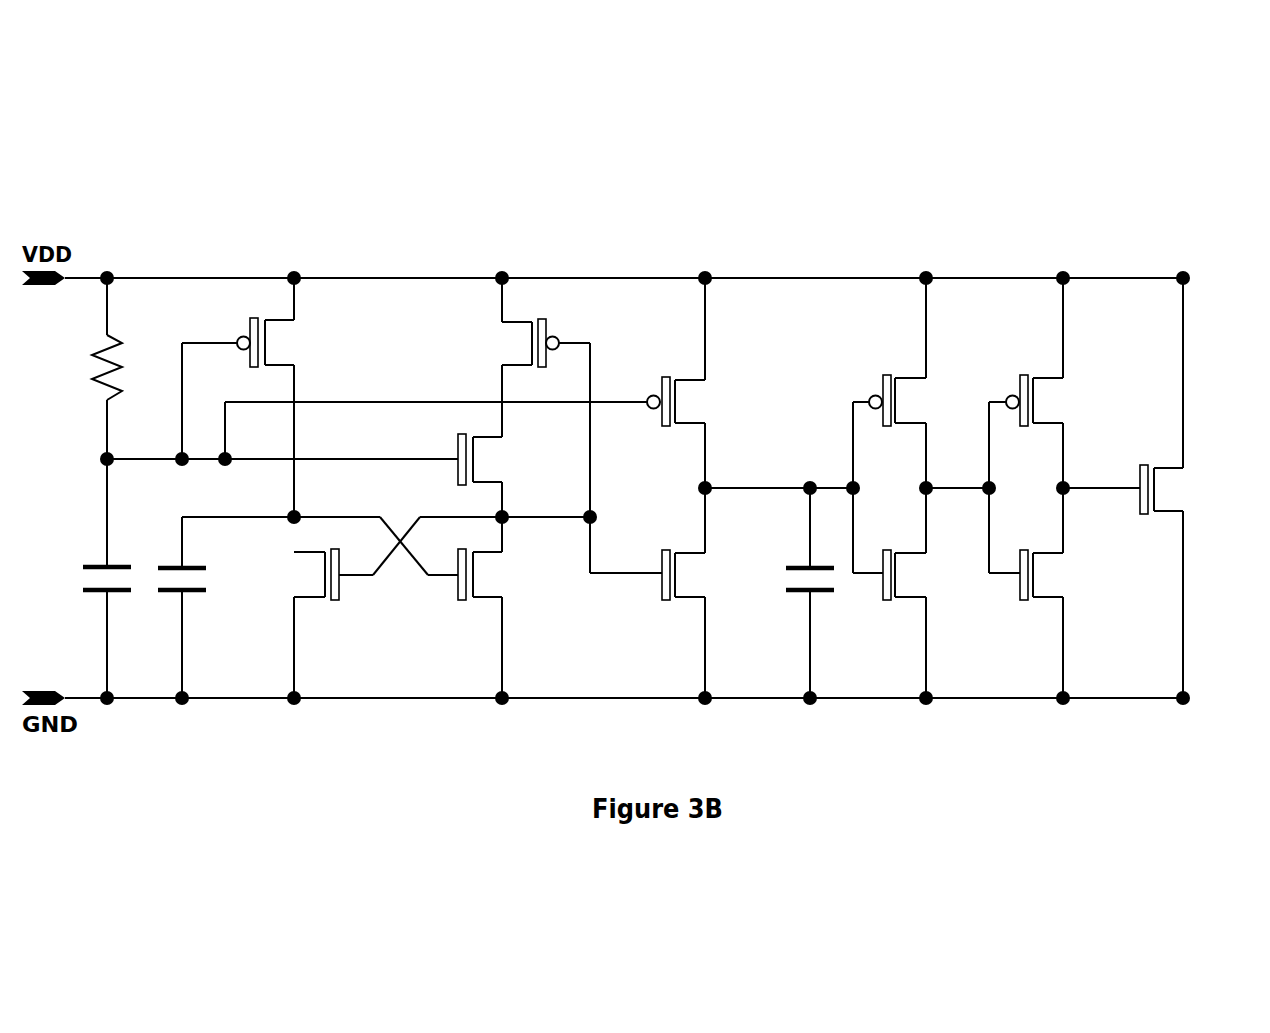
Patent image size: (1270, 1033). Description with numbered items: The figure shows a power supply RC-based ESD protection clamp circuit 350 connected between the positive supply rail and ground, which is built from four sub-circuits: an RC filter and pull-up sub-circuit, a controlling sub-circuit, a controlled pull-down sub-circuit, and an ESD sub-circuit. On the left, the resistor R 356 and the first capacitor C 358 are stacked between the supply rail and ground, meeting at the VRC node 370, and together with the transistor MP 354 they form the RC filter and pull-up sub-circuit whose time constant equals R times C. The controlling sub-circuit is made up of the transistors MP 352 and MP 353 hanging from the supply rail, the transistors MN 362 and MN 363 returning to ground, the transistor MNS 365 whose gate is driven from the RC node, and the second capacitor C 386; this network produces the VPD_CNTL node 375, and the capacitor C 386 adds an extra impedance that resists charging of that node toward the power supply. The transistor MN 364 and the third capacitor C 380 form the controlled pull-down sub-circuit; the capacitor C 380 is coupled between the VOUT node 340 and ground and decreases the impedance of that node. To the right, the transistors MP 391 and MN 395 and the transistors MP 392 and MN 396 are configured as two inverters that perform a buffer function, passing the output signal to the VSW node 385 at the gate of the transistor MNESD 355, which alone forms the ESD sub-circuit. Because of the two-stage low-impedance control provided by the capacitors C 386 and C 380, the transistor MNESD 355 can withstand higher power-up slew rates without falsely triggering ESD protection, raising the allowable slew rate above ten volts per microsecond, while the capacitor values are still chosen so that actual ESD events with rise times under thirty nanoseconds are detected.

The power supply RC-based ESD protection clamp circuit 350 is at (930, 153).
The resistor R 356 is at (82, 368).
The first capacitor C 358 is at (83, 578).
The VRC node 370 is at (343, 418).
The transistor MP 352 is at (301, 397).
The transistor MP 353 is at (511, 357).
The transistor MP 354 is at (711, 415).
The transistor MNS 365 is at (508, 493).
The VPD_CNTL node 375 is at (294, 517).
The transistor MN 362 is at (302, 623).
The transistor MN 363 is at (515, 623).
The transistor MN 364 is at (718, 624).
The third capacitor C 380 is at (617, 520).
The second capacitor C 386 is at (226, 607).
The VOUT node 340 is at (794, 487).
The transistor MP 391 is at (927, 415).
The transistor MP 392 is at (1028, 425).
The transistor MN 395 is at (926, 622).
The transistor MN 396 is at (1059, 624).
The VSW node 385 is at (1101, 490).
The transistor MNESD 355 is at (1199, 488).